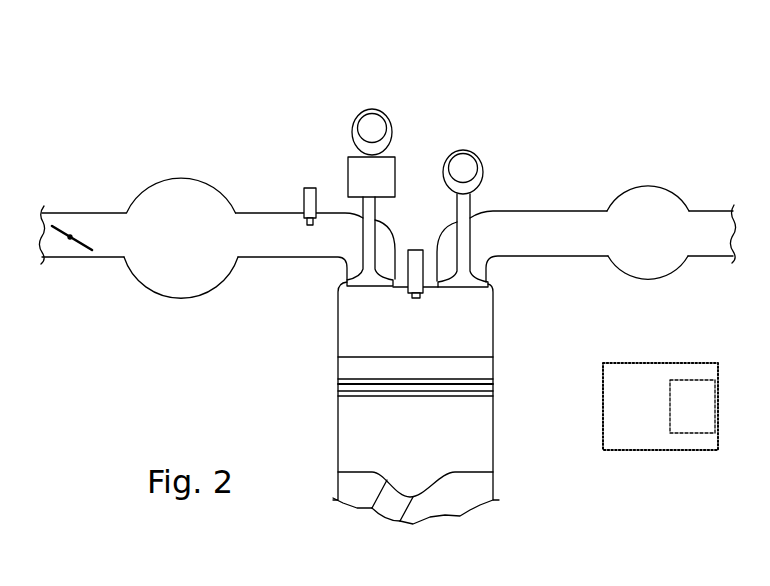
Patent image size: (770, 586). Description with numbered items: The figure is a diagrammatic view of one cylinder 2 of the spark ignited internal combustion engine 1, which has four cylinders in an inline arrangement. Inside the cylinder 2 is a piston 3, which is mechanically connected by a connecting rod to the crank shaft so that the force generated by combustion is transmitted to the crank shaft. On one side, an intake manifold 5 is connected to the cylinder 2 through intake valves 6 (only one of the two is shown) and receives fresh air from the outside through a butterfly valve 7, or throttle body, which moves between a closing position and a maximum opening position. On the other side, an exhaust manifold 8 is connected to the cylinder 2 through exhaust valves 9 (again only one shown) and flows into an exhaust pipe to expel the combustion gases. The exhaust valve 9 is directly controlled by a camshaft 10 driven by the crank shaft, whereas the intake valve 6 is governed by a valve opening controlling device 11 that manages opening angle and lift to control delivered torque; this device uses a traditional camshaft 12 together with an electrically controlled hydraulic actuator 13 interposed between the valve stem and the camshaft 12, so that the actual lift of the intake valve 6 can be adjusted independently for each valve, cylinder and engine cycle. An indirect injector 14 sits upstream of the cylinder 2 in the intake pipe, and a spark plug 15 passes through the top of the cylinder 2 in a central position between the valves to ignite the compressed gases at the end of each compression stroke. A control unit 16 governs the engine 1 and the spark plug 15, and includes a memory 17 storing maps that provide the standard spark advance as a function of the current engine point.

The internal combustion engine 1 is at (137, 95).
The cylinder 2 is at (352, 338).
The piston 3 is at (466, 423).
The intake manifold 5 is at (187, 205).
The intake valve 6 is at (369, 284).
The butterfly valve 7 is at (70, 237).
The exhaust manifold 8 is at (653, 212).
The exhaust valve 9 is at (462, 284).
The camshaft 10 is at (466, 168).
The valve opening controlling device 11 is at (311, 119).
The camshaft 12 is at (381, 128).
The hydraulic actuator 13 is at (371, 177).
The injector 14 is at (309, 188).
The spark plug 15 is at (416, 258).
The control unit 16 is at (660, 406).
The memory 17 is at (692, 406).